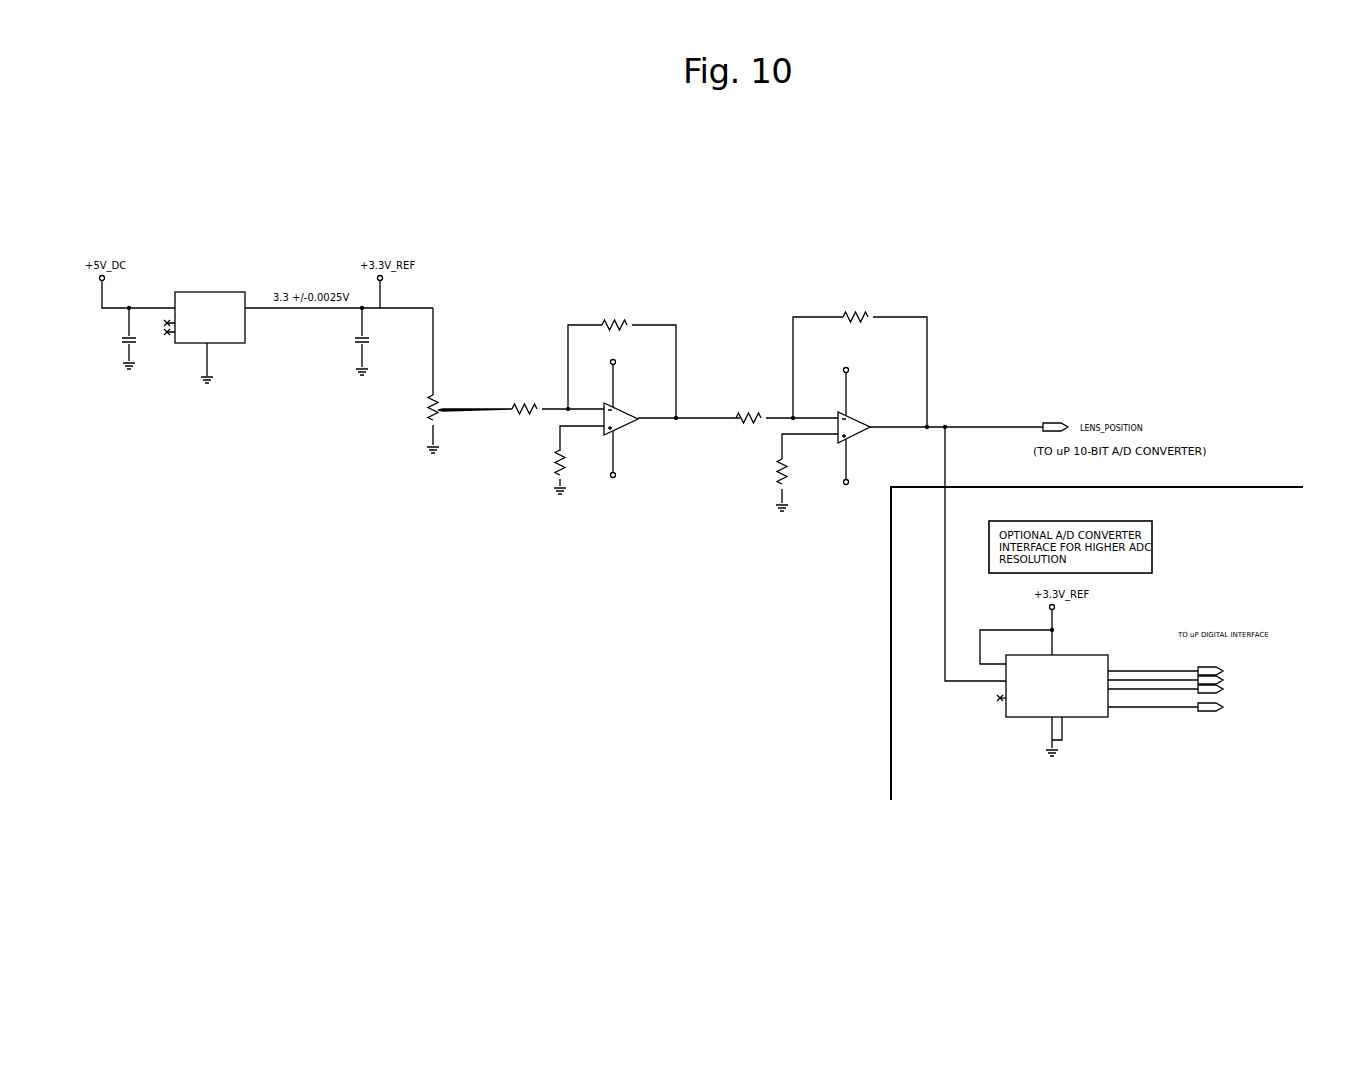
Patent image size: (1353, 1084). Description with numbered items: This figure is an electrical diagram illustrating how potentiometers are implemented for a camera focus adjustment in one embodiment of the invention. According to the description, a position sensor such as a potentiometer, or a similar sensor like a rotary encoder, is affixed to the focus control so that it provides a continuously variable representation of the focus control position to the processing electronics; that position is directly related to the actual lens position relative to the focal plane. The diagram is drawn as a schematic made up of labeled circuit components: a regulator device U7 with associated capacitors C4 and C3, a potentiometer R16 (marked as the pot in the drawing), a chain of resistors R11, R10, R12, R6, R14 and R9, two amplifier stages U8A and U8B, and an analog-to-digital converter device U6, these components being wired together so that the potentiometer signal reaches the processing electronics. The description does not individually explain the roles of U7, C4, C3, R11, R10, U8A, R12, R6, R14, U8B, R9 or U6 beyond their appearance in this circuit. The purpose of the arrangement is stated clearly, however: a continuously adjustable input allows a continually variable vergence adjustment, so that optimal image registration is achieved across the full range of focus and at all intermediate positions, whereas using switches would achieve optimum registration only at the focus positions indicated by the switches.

The voltage regulator LM1790-3.3 U7 is at (207, 324).
The capacitor 0.1uF C4 is at (114, 338).
The capacitor 1.0uF C3 is at (383, 341).
The potentiometer R16 is at (469, 380).
The resistor 100K R11 is at (554, 397).
The feedback resistor 100K R10 is at (622, 359).
The operational amplifier AD822 U8A is at (667, 416).
The resistor 49.9K R12 is at (563, 460).
The resistor 100K R6 is at (782, 407).
The gain resistor 1M R14 is at (860, 351).
The operational amplifier AD822 gain stage U8B is at (935, 423).
The resistor 90.9K R9 is at (792, 472).
The A/D converter LTC1861 U6 is at (1137, 683).